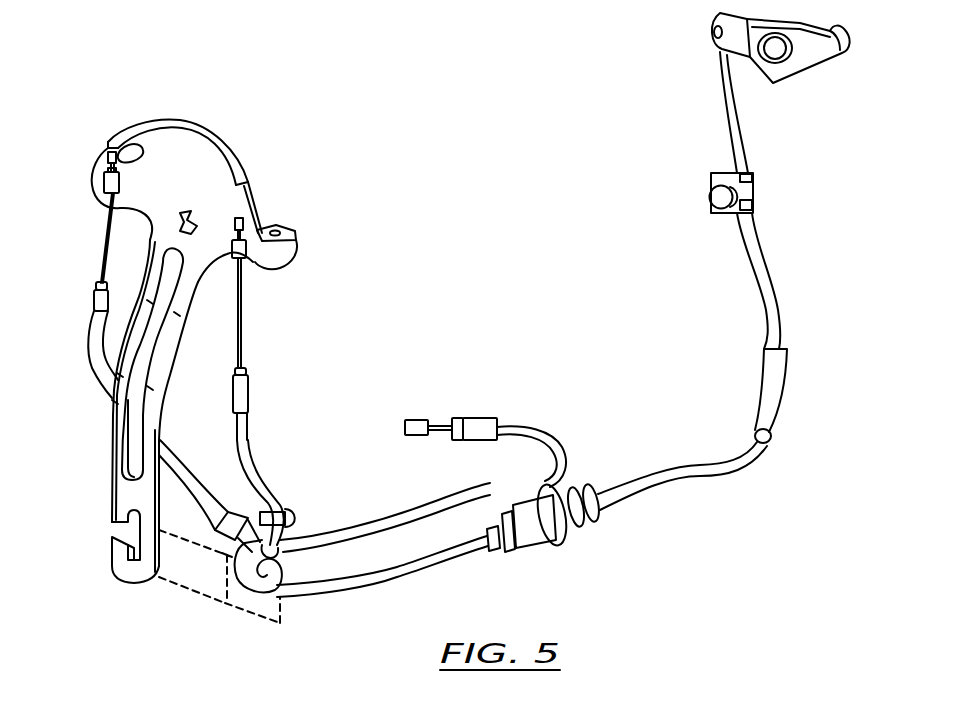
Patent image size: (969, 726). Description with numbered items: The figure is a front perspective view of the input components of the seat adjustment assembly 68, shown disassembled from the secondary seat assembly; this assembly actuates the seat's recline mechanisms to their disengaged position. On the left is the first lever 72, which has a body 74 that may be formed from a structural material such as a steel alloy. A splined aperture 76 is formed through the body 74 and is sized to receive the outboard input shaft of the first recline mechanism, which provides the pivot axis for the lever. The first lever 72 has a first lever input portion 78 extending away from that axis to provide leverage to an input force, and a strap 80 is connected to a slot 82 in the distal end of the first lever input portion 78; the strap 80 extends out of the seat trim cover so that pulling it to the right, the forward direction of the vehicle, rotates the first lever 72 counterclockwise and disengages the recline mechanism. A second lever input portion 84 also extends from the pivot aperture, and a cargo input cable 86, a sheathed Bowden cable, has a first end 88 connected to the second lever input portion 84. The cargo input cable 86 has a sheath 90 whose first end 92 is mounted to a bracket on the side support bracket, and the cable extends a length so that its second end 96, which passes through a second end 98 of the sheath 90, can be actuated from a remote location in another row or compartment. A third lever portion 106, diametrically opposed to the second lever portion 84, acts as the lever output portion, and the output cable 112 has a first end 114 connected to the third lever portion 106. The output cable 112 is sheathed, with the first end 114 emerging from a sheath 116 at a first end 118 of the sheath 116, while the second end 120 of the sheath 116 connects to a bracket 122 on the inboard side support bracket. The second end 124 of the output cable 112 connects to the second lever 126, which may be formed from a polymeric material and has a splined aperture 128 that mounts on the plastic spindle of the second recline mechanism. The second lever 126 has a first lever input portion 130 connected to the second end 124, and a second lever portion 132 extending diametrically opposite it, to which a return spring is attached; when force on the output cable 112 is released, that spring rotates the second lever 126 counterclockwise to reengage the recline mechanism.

The seat adjustment assembly 68 is at (393, 133).
The first lever 72 is at (170, 167).
The body 74 is at (140, 206).
The splined aperture 76 is at (178, 226).
The first lever input portion 78 is at (128, 497).
The strap 80 is at (282, 598).
The slot 82 is at (136, 566).
The second lever input portion 84 is at (104, 185).
The cargo input cable 86 is at (95, 375).
The first end 88 is at (108, 157).
The sheath 90 is at (88, 350).
The first end 92 is at (94, 288).
The second end 96 is at (485, 424).
The second end 98 is at (420, 424).
The third lever portion 106 is at (274, 262).
The output cable 112 is at (460, 555).
The first end 114 is at (246, 222).
The sheath 116 is at (397, 577).
The first end 118 is at (249, 380).
The second end 120 is at (755, 193).
The bracket 122 is at (711, 183).
The second end 124 is at (733, 150).
The second lever 126 is at (708, 32).
The splined aperture 128 is at (778, 72).
The first lever input portion 130 is at (718, 45).
The second lever portion 132 is at (833, 50).